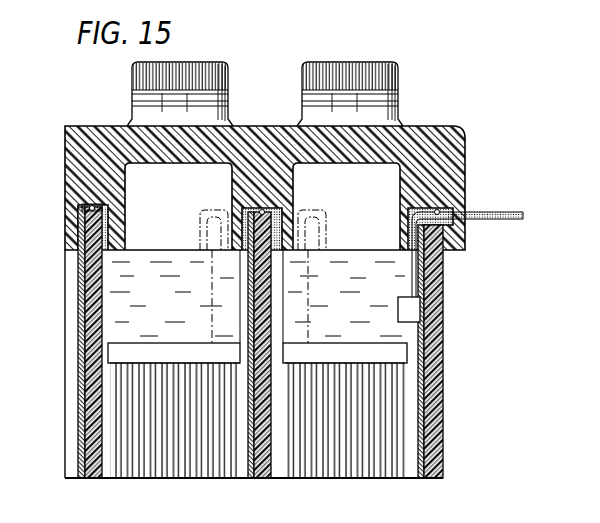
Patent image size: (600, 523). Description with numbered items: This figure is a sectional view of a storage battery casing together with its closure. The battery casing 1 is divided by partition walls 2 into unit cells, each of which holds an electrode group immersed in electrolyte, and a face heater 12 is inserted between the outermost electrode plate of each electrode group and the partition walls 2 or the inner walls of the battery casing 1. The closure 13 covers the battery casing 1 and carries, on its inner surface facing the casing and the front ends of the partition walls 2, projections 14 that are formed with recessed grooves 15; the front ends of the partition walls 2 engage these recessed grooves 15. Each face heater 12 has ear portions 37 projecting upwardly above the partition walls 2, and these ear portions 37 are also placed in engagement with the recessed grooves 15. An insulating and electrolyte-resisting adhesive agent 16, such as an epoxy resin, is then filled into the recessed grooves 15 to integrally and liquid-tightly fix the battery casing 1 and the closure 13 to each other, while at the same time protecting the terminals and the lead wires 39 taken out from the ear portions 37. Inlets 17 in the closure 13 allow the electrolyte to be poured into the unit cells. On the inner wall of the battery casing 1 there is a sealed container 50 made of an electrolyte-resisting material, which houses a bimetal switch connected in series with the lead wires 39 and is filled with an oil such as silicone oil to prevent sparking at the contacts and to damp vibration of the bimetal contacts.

The battery casing 1 is at (437, 355).
The partition walls 2 is at (92, 442).
The face heaters 12 is at (80, 412).
The closure 13 is at (467, 143).
The projections 14 is at (300, 185).
The recessed grooves 15 is at (84, 210).
The insulating and electrolyte-resisting adhesive agent 16 is at (106, 226).
The inlets 17 is at (136, 80).
The ear portions 37 is at (63, 240).
The lead wires 39 is at (250, 208).
The sealed container 50 is at (421, 310).